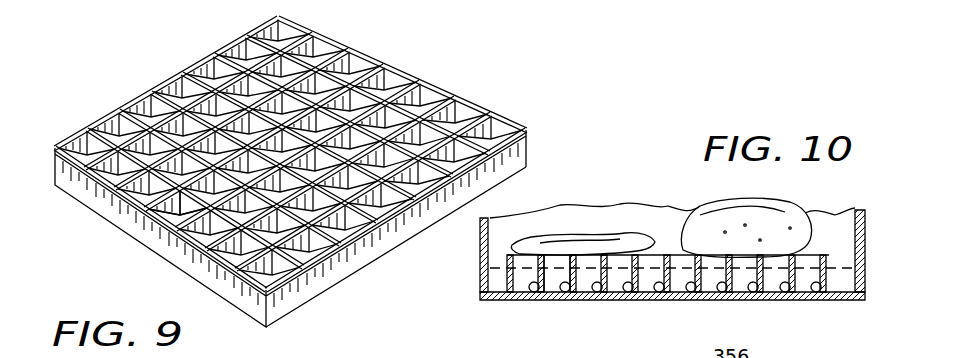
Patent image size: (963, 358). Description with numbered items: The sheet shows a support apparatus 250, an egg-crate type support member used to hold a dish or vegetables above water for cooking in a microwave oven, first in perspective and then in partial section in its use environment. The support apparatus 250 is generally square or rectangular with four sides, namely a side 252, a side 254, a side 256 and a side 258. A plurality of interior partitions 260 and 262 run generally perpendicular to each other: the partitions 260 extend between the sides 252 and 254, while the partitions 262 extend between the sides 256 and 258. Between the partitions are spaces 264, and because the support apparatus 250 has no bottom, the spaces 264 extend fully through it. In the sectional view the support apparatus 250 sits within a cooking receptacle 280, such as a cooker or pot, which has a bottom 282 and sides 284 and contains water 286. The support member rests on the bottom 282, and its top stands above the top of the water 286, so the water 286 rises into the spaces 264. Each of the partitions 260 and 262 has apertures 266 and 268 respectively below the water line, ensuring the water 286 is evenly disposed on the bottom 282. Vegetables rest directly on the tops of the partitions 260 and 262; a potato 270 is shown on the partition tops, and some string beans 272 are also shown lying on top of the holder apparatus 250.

In FIG. 9, the support apparatus 250 is at (302, 170).
In FIG. 10, the support apparatus 250 is at (671, 256).
In FIG. 9, the side 252 is at (355, 257).
In FIG. 9, the side 254 is at (174, 97).
In FIG. 9, the side 256 is at (497, 124).
In FIG. 9, the side 258 is at (206, 268).
In FIG. 9, the interior partitions 260 is at (187, 205).
In FIG. 10, the interior partitions 260 is at (502, 257).
In FIG. 9, the interior partitions 262 is at (370, 80).
In FIG. 10, the interior partitions 262 is at (553, 263).
In FIG. 9, the spaces 264 is at (340, 68).
In FIG. 10, the apertures 266 is at (537, 282).
In FIG. 10, the apertures 268 is at (583, 284).
In FIG. 10, the potato 270 is at (772, 202).
In FIG. 10, the string beans 272 is at (585, 233).
In FIG. 10, the cooking receptacle 280 is at (644, 272).
In FIG. 10, the bottom 282 is at (630, 299).
In FIG. 10, the sides 284 is at (483, 244).
In FIG. 10, the water 286 is at (846, 246).